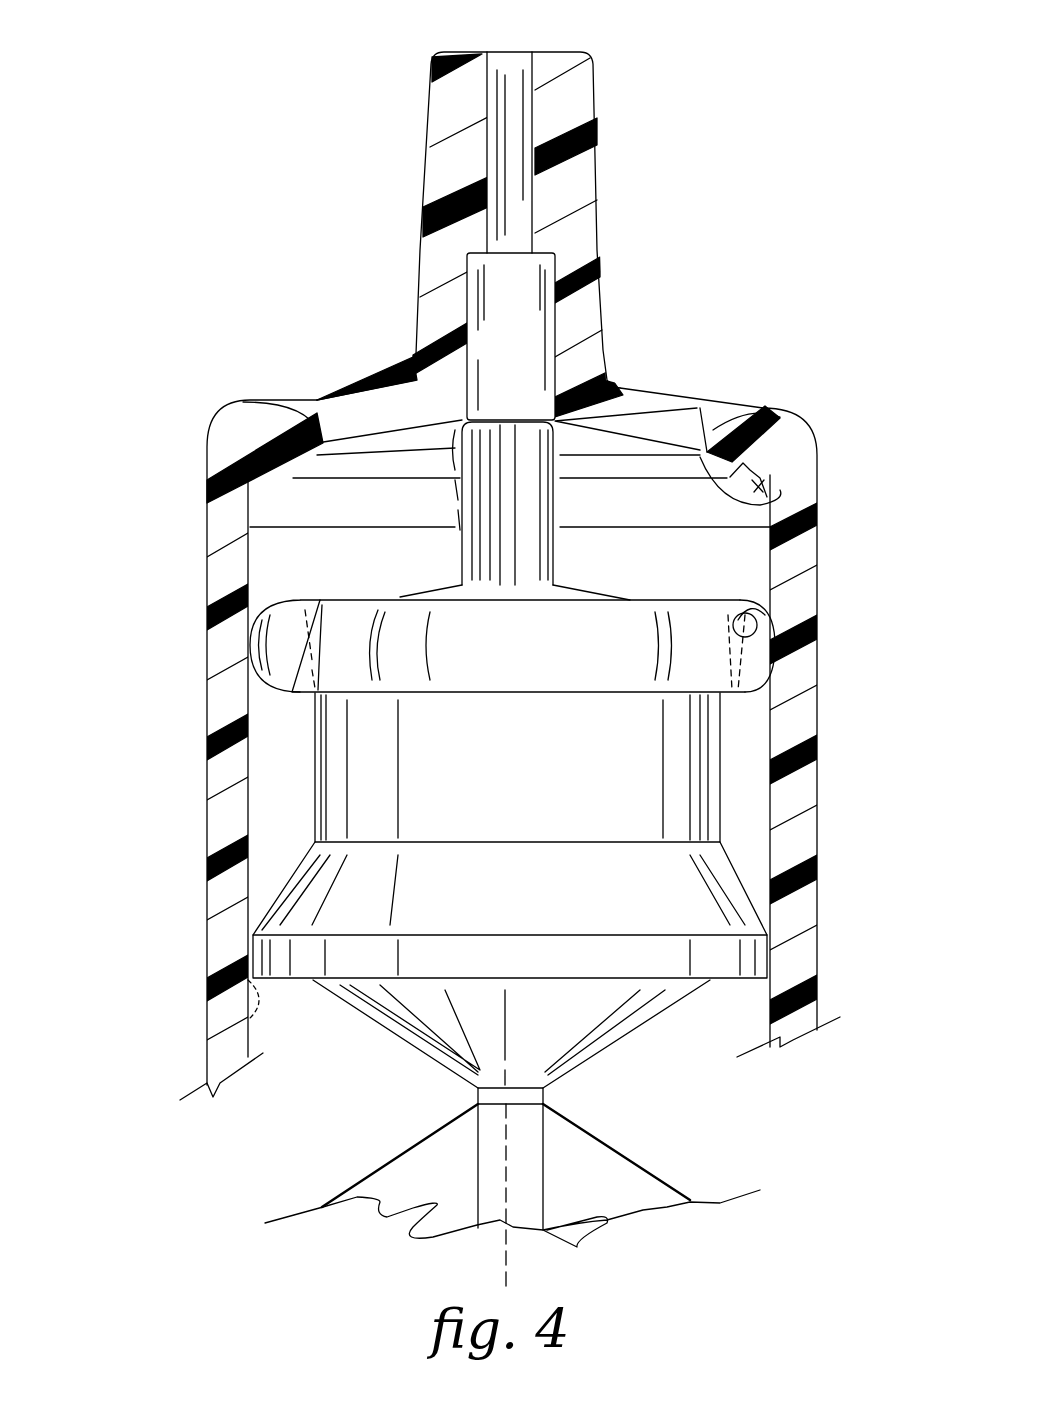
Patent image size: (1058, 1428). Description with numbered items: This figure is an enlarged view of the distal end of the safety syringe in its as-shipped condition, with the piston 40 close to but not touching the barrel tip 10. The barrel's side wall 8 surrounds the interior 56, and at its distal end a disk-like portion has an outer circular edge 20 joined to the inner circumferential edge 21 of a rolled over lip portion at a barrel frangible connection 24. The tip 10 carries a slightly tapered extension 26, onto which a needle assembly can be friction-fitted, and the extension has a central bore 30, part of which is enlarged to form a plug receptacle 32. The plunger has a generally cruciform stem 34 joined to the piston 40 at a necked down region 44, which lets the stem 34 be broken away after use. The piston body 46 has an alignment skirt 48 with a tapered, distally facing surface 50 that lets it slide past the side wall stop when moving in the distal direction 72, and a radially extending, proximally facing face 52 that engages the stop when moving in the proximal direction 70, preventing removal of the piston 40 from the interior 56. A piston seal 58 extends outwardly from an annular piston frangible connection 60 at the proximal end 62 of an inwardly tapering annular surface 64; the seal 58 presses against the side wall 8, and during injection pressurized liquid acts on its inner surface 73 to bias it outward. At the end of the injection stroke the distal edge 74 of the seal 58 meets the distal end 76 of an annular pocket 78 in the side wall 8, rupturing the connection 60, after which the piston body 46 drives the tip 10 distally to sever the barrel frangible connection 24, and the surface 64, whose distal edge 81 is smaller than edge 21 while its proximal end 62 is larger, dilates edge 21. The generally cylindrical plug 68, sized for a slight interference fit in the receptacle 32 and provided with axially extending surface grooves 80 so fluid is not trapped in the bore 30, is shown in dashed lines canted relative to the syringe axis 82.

The side wall 8 is at (795, 800).
The barrel tip 10 is at (607, 190).
The outer circular edge 20 is at (322, 400).
The inner circumferential edge 21 is at (210, 503).
The barrel frangible connection 24 is at (790, 515).
The tapered extension 26 is at (597, 110).
The central bore 30 is at (520, 75).
The plug receptacle 32 is at (512, 283).
The stem 34 is at (617, 1150).
The piston 40 is at (315, 788).
The necked down region 44 is at (545, 1092).
The piston body 46 is at (315, 738).
The alignment skirt 48 is at (265, 948).
The tapered, distally facing surface 50 is at (300, 855).
The radially extending, proximally facing face 52 is at (270, 1000).
The interior 56 is at (468, 569).
The piston seal 58 is at (750, 660).
The annular piston frangible connection 60 is at (738, 695).
The proximal end 62 is at (255, 668).
The inwardly tapering annular surface 64 is at (305, 632).
The plug 68 is at (527, 467).
The proximal direction 70 is at (793, 1170).
The distal direction 72 is at (228, 1178).
The inner surface 73 is at (750, 628).
The distal edge 74 is at (783, 580).
The distal end 76 is at (752, 470).
The annular pocket 78 is at (762, 482).
The surface grooves 80 is at (555, 450).
The distal edge 81 is at (312, 620).
The axis 82 is at (510, 1247).